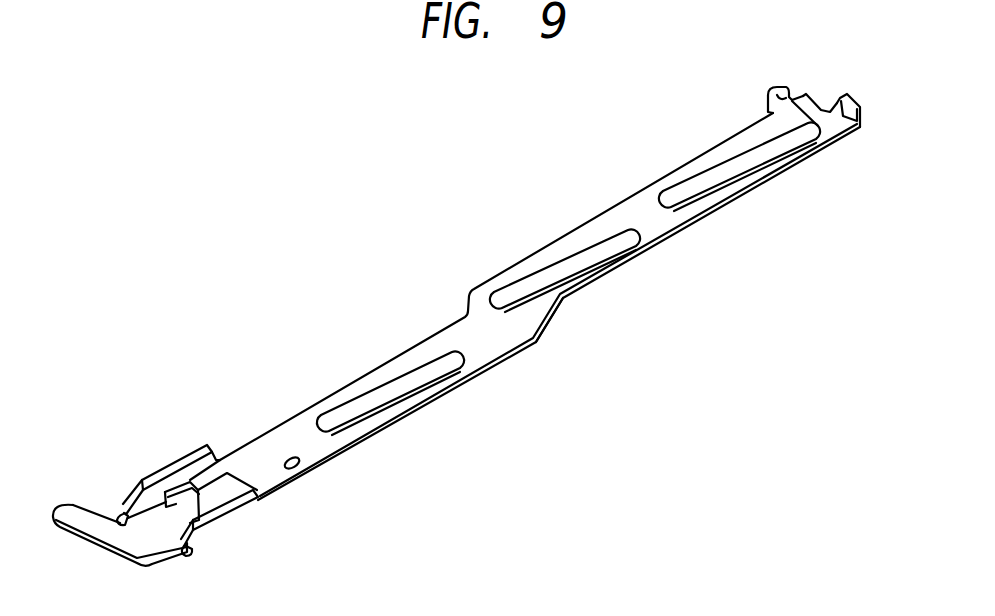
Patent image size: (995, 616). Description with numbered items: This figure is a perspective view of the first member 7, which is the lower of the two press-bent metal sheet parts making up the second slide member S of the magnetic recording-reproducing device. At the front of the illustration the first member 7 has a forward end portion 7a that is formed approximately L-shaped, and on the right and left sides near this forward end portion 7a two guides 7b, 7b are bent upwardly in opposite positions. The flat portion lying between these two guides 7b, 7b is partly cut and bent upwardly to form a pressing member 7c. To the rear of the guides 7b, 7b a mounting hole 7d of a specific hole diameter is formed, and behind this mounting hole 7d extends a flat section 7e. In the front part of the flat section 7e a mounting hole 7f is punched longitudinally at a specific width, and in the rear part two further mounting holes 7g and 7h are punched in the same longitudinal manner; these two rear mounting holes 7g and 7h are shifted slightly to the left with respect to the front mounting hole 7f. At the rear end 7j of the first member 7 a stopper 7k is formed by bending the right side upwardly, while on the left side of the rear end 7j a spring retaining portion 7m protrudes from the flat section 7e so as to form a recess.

The first member 7 is at (524, 248).
The forward end portion 7a is at (108, 532).
The guides 7b is at (162, 470).
The pressing member 7c is at (172, 506).
The mounting hole 7d is at (301, 464).
The flat section 7e is at (492, 348).
The mounting hole 7f is at (398, 392).
The mounting hole 7g is at (585, 262).
The mounting hole 7h is at (722, 176).
The rear end 7j is at (813, 96).
The stopper 7k is at (856, 96).
The spring retaining portion 7m is at (775, 86).
The second slide member S is at (351, 350).